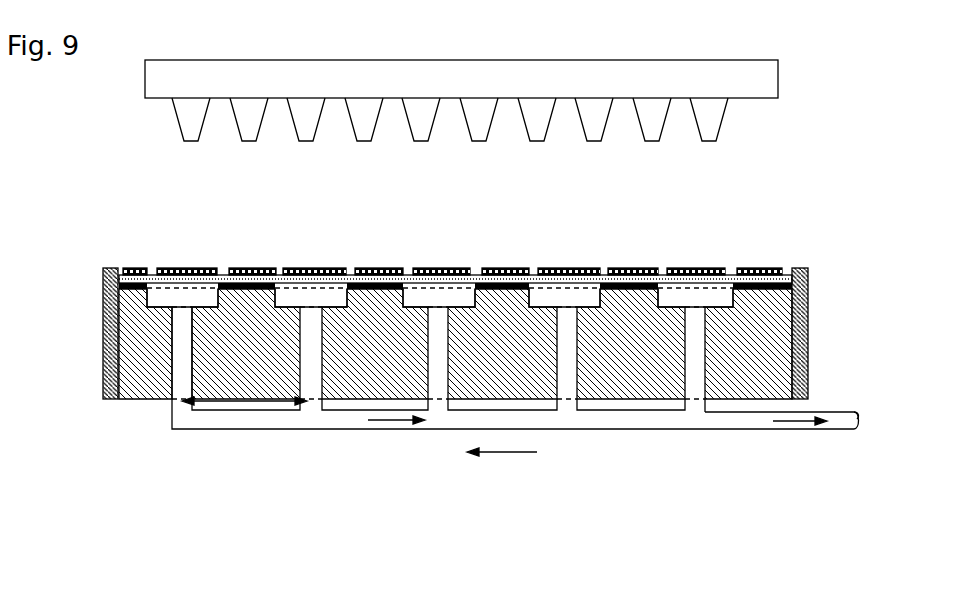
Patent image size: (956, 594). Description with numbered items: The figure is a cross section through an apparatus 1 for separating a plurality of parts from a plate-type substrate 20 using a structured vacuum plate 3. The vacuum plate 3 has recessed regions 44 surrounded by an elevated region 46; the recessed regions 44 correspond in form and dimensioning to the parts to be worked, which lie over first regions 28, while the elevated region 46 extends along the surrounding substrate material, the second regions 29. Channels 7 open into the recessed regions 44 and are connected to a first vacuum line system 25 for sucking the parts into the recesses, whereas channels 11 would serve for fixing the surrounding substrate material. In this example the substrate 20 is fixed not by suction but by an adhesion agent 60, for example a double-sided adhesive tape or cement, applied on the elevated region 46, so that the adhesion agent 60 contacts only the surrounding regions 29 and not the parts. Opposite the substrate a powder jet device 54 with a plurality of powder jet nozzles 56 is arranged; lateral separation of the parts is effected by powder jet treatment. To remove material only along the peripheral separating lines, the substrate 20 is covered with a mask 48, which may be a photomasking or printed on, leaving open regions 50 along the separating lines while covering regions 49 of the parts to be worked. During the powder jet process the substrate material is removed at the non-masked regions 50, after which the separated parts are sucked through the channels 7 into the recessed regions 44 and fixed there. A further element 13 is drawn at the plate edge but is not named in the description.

The apparatus 1 is at (90, 164).
The vacuum plate 3 is at (140, 349).
The channels 7 is at (300, 403).
The channels 11 is at (627, 402).
The left frame wall 13 is at (103, 277).
The substrate 20 is at (745, 280).
The first vacuum line system 25 is at (813, 430).
The first regions 28 is at (455, 278).
The second regions 29 is at (375, 283).
The recessed regions 44 is at (232, 285).
The elevated region 46 is at (197, 308).
The mask 48 is at (298, 246).
The covered regions 49 is at (358, 272).
The open regions 50 is at (470, 275).
The powder jet device 54 is at (790, 60).
The powder jet nozzles 56 is at (720, 128).
The adhesion agent 60 is at (632, 287).